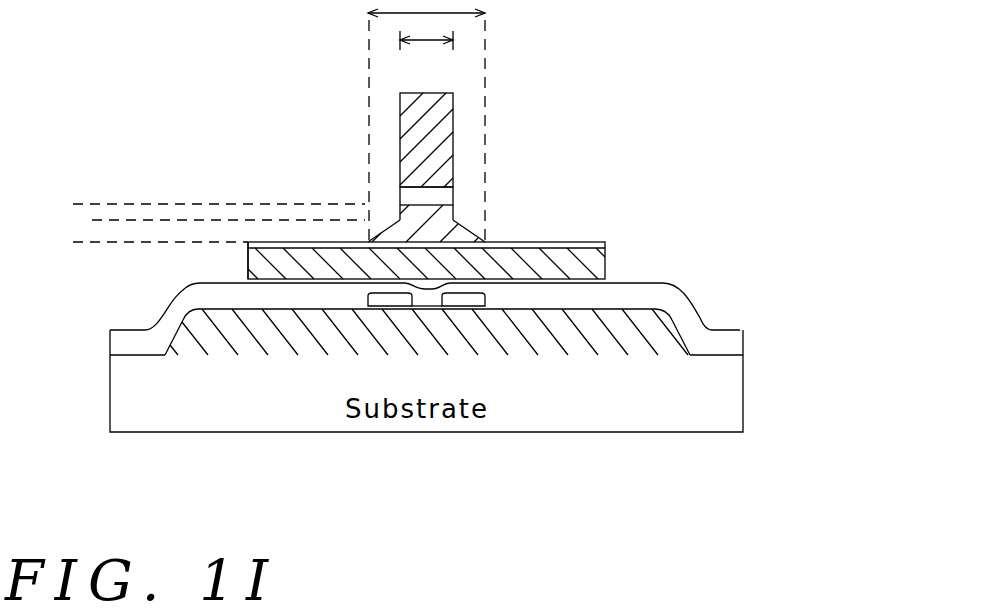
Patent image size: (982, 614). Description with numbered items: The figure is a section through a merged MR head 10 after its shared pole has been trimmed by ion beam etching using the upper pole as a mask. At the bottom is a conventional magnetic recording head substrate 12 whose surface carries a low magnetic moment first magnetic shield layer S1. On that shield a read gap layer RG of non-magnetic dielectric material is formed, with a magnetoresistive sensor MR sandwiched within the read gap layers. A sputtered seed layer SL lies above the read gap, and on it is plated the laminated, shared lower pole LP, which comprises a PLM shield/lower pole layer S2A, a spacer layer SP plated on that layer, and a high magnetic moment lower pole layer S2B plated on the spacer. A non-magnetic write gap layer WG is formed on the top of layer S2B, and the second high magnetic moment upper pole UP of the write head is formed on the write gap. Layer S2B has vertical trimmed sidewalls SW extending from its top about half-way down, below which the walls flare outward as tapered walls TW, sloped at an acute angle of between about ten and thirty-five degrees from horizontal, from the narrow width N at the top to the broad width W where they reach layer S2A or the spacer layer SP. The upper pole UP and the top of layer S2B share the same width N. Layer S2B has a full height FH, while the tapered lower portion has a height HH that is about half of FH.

The merged MR head 10 is at (133, 456).
The magnetic recording head substrate 12 is at (130, 401).
The first magnetic shield layer S1 is at (252, 337).
The magnetoresistive sensor MR is at (380, 298).
The read gap layer RG is at (118, 341).
The spacer layer SP is at (438, 249).
The PLM shield/lower pole layer S2A is at (590, 264).
The high magnetic moment lower pole layer S2B is at (458, 232).
The seed layer SL is at (248, 281).
The trimmed sidewalls SW is at (398, 220).
The tapered walls TW is at (392, 226).
The write gap layer WG is at (443, 197).
The upper pole UP is at (425, 100).
The lower pole LP is at (548, 144).
The base width W is at (426, 121).
The narrow width N is at (426, 34).
The full height FH is at (66, 268).
The tapered portion height HH is at (108, 268).